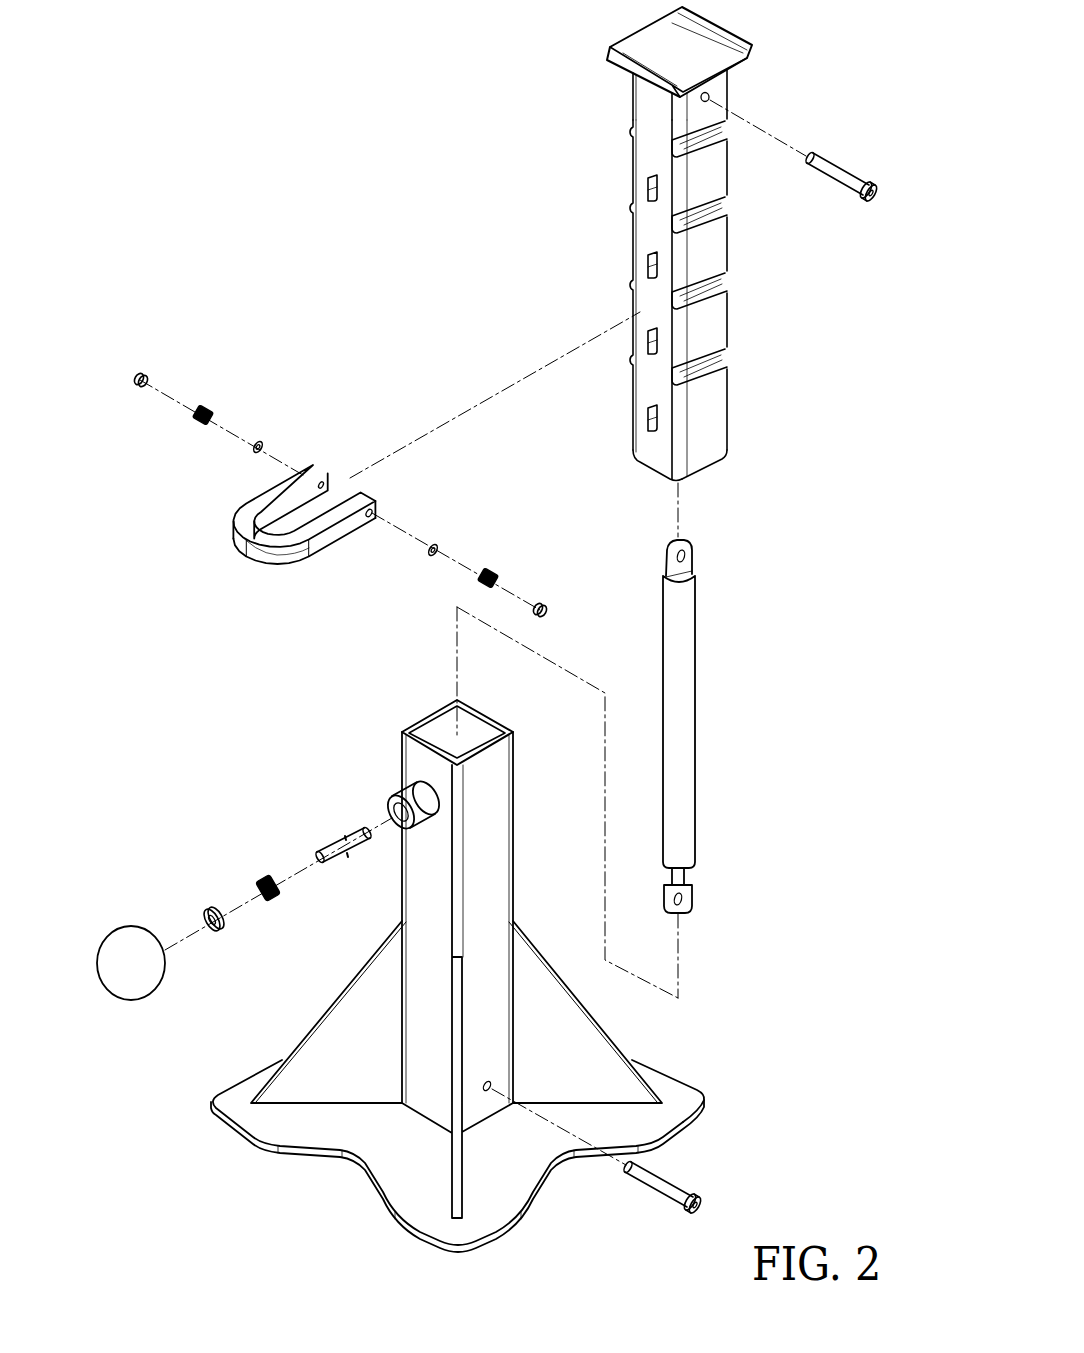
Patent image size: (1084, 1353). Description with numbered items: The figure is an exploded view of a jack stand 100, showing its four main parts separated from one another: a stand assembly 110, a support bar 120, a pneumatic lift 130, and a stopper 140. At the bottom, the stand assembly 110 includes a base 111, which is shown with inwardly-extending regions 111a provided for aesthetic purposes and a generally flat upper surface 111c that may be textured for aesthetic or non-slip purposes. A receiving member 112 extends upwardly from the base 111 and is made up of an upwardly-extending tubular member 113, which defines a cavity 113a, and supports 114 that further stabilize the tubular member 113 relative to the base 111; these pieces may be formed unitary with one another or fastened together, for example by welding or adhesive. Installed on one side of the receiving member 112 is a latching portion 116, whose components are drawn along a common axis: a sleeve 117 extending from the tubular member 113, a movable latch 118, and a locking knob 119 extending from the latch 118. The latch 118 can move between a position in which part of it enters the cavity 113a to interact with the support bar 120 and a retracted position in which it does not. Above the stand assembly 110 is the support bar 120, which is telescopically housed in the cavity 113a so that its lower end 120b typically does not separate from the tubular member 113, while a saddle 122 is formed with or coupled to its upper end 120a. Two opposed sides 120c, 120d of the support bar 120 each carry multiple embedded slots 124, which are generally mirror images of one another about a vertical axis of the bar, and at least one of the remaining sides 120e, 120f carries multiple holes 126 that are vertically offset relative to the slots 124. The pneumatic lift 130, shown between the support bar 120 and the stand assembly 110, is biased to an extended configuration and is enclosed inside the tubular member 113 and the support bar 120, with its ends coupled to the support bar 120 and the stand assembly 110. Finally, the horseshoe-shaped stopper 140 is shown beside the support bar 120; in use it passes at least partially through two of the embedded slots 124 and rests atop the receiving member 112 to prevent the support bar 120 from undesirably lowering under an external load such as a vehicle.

The jack stand 100 is at (215, 142).
The stand assembly 110 is at (212, 1153).
The base 111 is at (483, 1205).
The inwardly-extending regions 111a is at (308, 1152).
The upper surface 111c is at (673, 1085).
The receiving member 112 is at (535, 913).
The tubular member 113 is at (493, 776).
The cavity 113a is at (437, 730).
The supports 114 is at (338, 1025).
The latching portion 116 is at (388, 781).
The sleeve 117 is at (395, 805).
The latch 118 is at (337, 850).
The locking knob 119 is at (115, 948).
The support bar 120 is at (550, 250).
The upper end 120a is at (598, 63).
The lower end 120b is at (740, 482).
The side 120c is at (750, 342).
The side 120d is at (615, 210).
The side 120e is at (645, 480).
The side 120f is at (748, 178).
The saddle 122 is at (657, 45).
The embedded slots 124 is at (727, 286).
The holes 126 is at (648, 428).
The pneumatic lift 130 is at (715, 665).
The stopper 140 is at (266, 428).